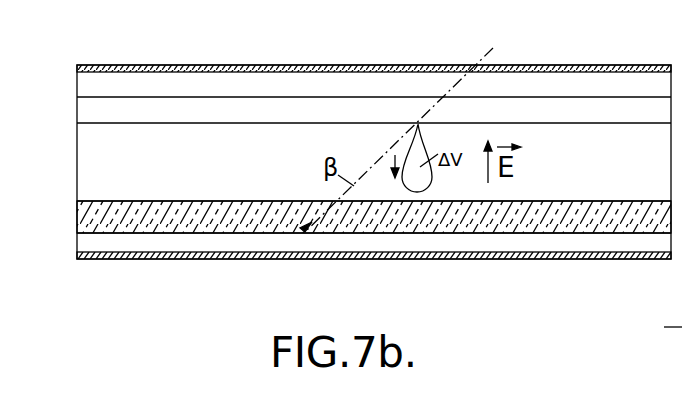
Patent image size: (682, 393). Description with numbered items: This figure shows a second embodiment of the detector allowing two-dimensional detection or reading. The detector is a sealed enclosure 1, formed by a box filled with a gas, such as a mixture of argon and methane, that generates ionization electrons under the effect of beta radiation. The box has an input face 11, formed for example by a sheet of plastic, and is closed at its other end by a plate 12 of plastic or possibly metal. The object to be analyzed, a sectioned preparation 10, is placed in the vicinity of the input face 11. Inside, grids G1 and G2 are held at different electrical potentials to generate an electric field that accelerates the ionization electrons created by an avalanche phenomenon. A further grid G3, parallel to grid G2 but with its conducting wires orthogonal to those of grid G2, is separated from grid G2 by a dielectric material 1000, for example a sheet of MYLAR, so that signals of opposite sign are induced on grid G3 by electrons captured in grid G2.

The sealed enclosure 1 is at (77, 152).
The sectioned preparation 10 is at (541, 68).
The input face 11 is at (592, 97).
The plate 12 is at (600, 256).
The dielectric material 1000 is at (103, 220).
The grid G1 is at (230, 122).
The grid G2 is at (152, 202).
The grid G3 is at (230, 233).